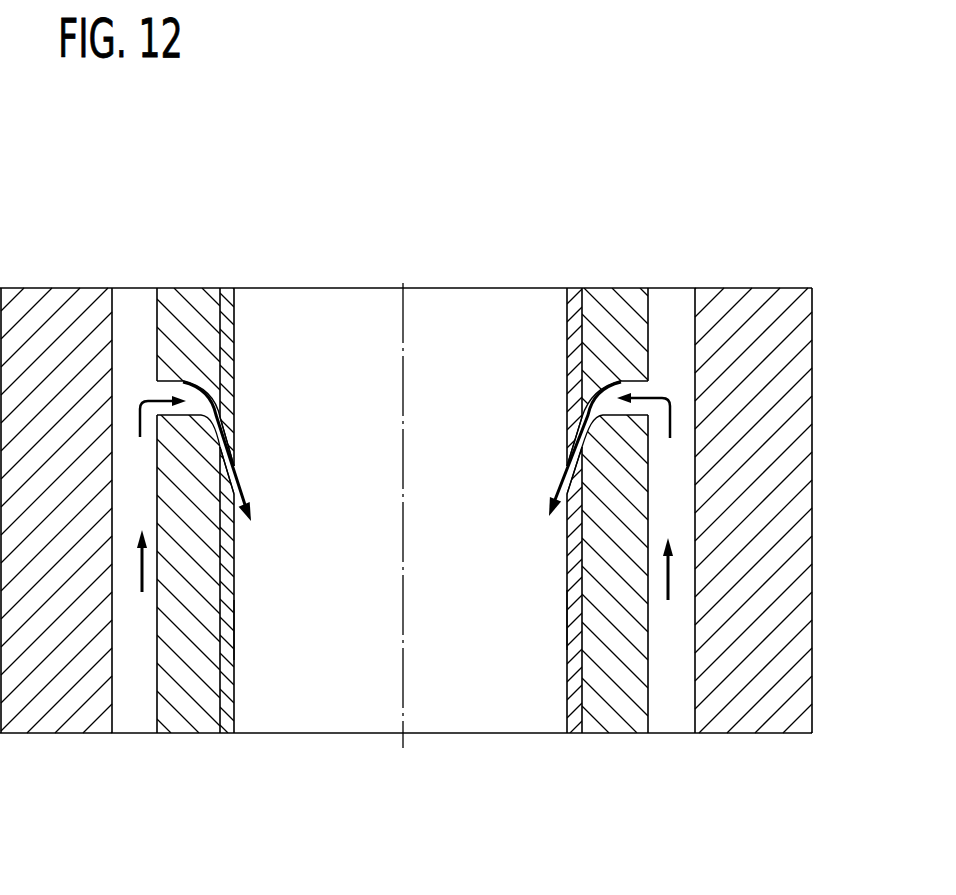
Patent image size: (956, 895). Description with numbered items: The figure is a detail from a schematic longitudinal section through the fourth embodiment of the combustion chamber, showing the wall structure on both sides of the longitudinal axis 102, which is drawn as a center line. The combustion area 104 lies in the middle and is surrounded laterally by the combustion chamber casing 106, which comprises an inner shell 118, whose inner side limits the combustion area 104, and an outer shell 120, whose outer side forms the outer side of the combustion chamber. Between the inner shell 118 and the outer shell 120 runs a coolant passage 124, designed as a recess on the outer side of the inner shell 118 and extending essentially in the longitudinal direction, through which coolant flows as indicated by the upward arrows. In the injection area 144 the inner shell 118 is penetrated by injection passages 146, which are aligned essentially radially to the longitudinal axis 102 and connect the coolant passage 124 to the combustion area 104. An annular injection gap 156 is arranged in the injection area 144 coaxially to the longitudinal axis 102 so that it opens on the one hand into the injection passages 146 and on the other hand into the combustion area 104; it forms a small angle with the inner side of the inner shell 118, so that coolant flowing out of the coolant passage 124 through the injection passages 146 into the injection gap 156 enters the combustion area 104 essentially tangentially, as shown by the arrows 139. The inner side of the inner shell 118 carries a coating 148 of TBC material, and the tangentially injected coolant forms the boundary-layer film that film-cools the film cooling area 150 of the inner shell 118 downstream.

The longitudinal axis 102 is at (408, 317).
The combustion area 104 is at (435, 722).
The combustion chamber casing 106 is at (76, 280).
The inner shell 118 is at (197, 718).
The outer shell 120 is at (60, 705).
The coolant passage 124 is at (143, 715).
The arrows 139 is at (242, 507).
The injection area 144 is at (270, 507).
The injection passages 146 is at (178, 384).
The coating 148 is at (228, 298).
The film cooling area 150 is at (244, 633).
The annular injection gap 156 is at (233, 427).